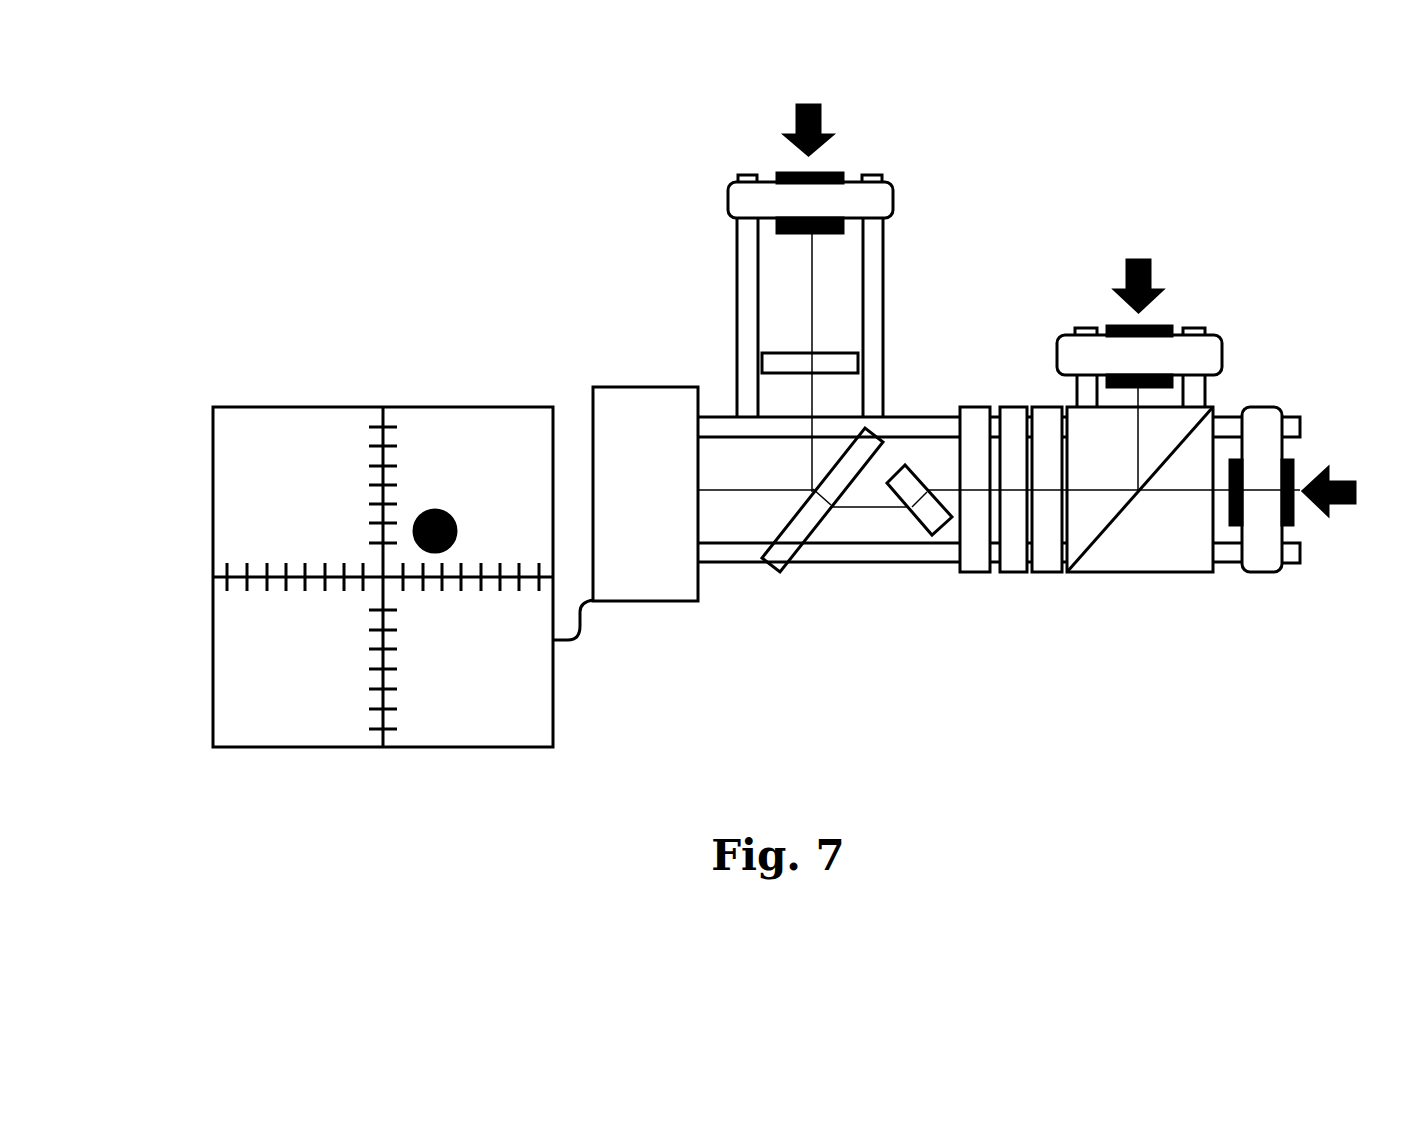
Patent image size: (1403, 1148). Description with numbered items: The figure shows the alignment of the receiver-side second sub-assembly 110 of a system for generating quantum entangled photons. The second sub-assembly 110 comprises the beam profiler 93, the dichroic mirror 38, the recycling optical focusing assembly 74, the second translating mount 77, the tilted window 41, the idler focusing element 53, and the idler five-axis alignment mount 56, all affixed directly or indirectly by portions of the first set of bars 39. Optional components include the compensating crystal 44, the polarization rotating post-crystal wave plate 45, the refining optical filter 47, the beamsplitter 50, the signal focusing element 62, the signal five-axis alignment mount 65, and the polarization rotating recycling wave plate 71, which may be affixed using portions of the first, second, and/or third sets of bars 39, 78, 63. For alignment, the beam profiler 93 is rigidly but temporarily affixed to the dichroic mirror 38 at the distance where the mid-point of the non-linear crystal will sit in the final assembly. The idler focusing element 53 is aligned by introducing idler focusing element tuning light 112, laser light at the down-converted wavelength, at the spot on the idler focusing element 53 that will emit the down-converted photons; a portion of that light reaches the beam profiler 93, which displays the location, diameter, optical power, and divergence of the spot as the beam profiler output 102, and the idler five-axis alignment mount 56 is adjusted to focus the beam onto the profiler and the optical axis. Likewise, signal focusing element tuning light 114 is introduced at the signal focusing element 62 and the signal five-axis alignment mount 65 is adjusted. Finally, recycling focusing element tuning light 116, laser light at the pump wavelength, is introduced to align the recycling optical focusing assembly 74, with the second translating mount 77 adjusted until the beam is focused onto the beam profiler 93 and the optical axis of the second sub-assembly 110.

The dichroic mirror 38 is at (781, 562).
The first set of bars 39 is at (854, 562).
The tilted window 41 is at (932, 530).
The compensating crystal 44 is at (979, 580).
The polarization rotating post-crystal wave plate 45 is at (1014, 580).
The refining optical filter 47 is at (1048, 580).
The beamsplitter 50 is at (1135, 580).
The idler focusing element 53 is at (1233, 533).
The idler 5-axis alignment mount 56 is at (1262, 582).
The signal focusing element 62 is at (1177, 327).
The third set of bars 63 is at (1073, 392).
The signal 5-axis alignment mount 65 is at (1067, 340).
The polarization rotating recycling wave plate 71 is at (767, 348).
The recycling optical focusing assembly 74 is at (773, 227).
The second translating mount 77 is at (740, 200).
The second set of bars 78 is at (877, 253).
The beam profiler 93 is at (642, 630).
The beam profiler output 102 is at (378, 760).
The second sub-assembly 110 is at (1138, 758).
The idler focusing element tuning light 112 is at (1329, 523).
The signal focusing element tuning light 114 is at (1163, 271).
The recycling focusing element tuning light 116 is at (774, 135).